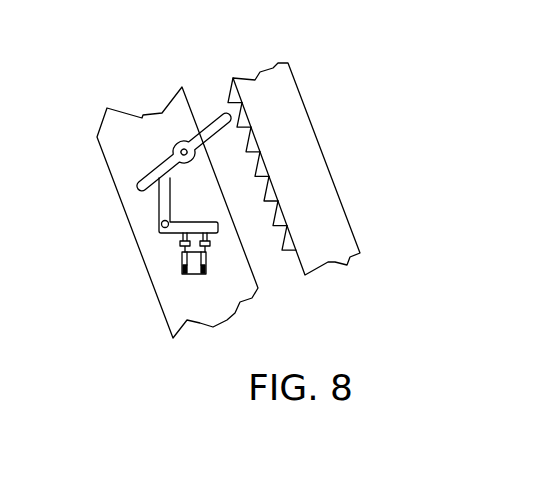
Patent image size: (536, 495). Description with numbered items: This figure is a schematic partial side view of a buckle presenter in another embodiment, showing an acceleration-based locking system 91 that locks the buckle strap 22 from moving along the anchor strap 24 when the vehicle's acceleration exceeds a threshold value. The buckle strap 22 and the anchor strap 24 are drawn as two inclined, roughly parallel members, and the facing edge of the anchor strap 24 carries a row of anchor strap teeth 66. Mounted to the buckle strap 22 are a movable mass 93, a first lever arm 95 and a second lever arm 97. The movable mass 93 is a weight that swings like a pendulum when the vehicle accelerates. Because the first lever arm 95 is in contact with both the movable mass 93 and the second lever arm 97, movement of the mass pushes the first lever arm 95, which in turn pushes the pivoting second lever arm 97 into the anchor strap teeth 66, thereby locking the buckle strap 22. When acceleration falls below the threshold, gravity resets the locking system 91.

The buckle strap 22 is at (107, 164).
The anchor strap 24 is at (321, 151).
The anchor strap teeth 66 is at (229, 94).
The acceleration-based locking system 91 is at (115, 93).
The movable mass 93 is at (182, 264).
The first lever arm 95 is at (158, 210).
The second lever arm 97 is at (162, 167).